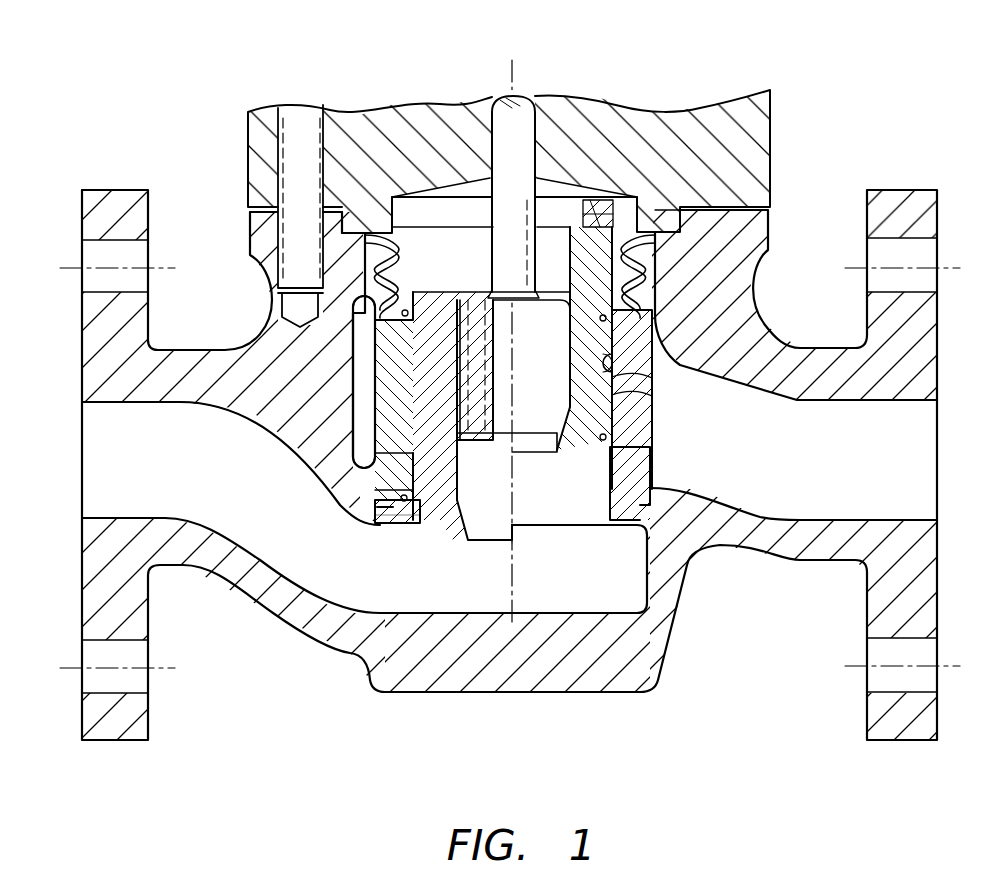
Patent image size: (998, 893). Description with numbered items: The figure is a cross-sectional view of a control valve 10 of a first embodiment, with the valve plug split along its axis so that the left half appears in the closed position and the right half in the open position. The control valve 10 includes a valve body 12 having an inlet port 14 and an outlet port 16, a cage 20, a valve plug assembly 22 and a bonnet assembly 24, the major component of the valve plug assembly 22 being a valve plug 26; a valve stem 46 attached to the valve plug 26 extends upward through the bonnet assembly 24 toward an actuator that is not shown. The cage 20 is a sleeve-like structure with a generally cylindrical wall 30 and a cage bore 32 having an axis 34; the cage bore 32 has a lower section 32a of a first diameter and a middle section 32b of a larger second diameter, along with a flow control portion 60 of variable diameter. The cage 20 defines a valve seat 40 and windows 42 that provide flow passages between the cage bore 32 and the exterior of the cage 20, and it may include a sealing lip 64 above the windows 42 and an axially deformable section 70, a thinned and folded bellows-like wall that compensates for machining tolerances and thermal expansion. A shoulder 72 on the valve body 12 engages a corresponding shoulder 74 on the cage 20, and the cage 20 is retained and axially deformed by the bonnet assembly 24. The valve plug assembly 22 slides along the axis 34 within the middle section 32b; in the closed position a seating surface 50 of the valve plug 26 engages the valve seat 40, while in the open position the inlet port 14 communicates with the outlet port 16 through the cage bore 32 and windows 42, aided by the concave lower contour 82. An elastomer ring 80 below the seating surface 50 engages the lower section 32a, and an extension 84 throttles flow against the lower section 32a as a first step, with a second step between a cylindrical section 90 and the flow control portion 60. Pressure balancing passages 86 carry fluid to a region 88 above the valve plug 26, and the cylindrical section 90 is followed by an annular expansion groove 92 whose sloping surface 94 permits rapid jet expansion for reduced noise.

The control valve 10 is at (266, 72).
The valve body 12 is at (293, 628).
The inlet port 14 is at (104, 454).
The outlet port 16 is at (883, 446).
The cage 20 is at (656, 475).
The valve plug assembly 22 is at (458, 540).
The bonnet assembly 24 is at (775, 140).
The valve plug 26 is at (458, 432).
The cylindrical wall 30 is at (292, 428).
The cage bore 32 is at (523, 500).
The lower section 32a is at (590, 520).
The middle section 32b is at (597, 357).
The axis 34 is at (512, 597).
The valve seat 40 is at (617, 492).
The windows 42 is at (379, 424).
The valve stem 46 is at (537, 115).
The seating surface 50 is at (642, 412).
The flow control portion 60 is at (613, 470).
The sealing lip 64 is at (567, 301).
The axially deformable section 70 is at (657, 266).
The shoulder 72 is at (372, 520).
The shoulder 74 is at (372, 495).
The elastomer ring 80 is at (430, 496).
The lower contour 82 is at (452, 521).
The extension 84 is at (418, 502).
The pressure balancing passages 86 is at (539, 267).
The region 88 is at (434, 264).
The cylindrical section 90 is at (617, 397).
The annular expansion groove 92 is at (598, 363).
The surface 94 is at (614, 377).